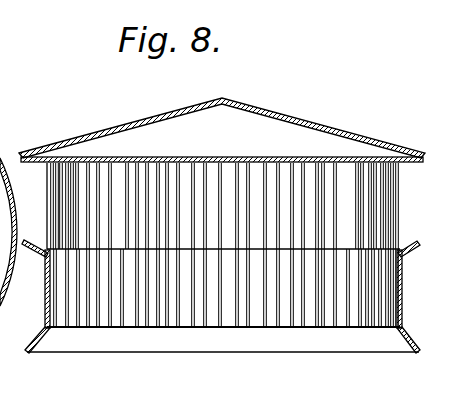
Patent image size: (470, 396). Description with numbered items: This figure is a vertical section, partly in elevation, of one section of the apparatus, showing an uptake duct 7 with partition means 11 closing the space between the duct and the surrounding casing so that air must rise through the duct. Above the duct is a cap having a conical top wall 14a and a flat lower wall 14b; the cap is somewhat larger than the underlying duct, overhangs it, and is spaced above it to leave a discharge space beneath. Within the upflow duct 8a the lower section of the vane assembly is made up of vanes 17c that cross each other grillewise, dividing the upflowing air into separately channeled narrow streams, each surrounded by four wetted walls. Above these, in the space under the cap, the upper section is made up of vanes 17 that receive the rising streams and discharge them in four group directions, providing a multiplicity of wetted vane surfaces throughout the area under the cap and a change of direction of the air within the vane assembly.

The uptake duct 7 is at (38, 167).
The upflow duct 8a is at (43, 312).
The partition means 11 is at (408, 247).
The conical top wall 14a is at (298, 97).
The flat lower wall 14b is at (313, 155).
The vanes 17 is at (103, 180).
The vanes 17c is at (362, 321).